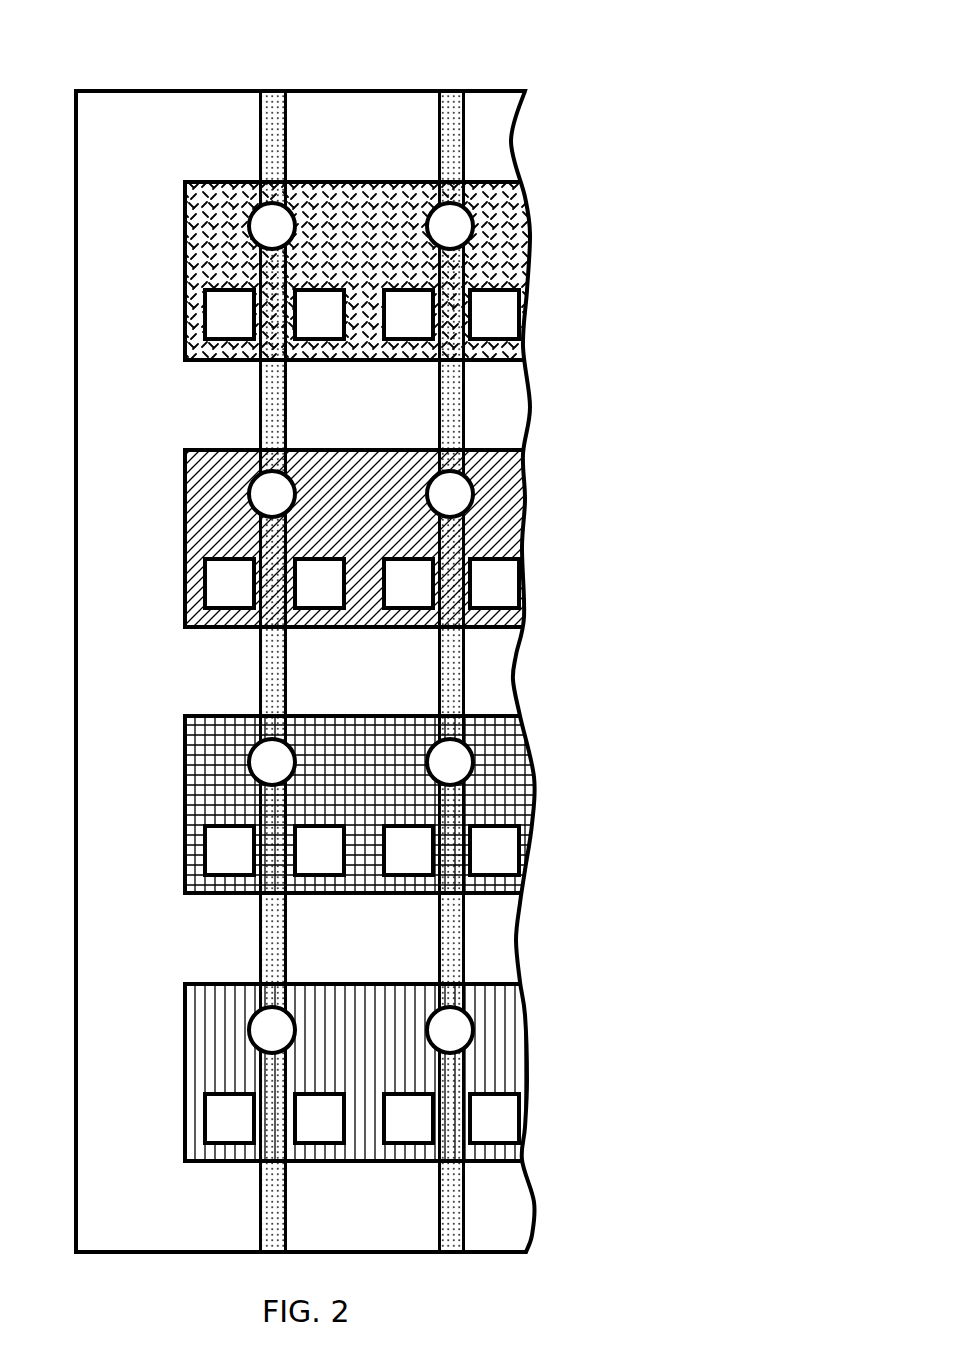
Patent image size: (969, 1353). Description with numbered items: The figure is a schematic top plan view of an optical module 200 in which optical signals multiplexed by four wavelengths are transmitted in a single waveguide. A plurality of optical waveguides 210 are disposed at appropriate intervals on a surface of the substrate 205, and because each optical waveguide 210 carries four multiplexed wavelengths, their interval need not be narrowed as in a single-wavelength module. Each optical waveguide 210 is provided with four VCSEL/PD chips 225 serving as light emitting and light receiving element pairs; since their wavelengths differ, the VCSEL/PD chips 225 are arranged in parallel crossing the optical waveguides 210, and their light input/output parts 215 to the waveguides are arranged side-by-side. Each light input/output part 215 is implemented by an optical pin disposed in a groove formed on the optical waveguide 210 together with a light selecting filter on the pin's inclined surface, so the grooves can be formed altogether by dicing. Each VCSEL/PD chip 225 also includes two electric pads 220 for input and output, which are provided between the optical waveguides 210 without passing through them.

The optical module 200 is at (679, 70).
The substrate 205 is at (143, 90).
The optical waveguide 210 is at (452, 125).
The light input/output part 215 is at (460, 226).
The electric pad 220 is at (505, 315).
The VCSEL/PD chip 225 is at (508, 258).